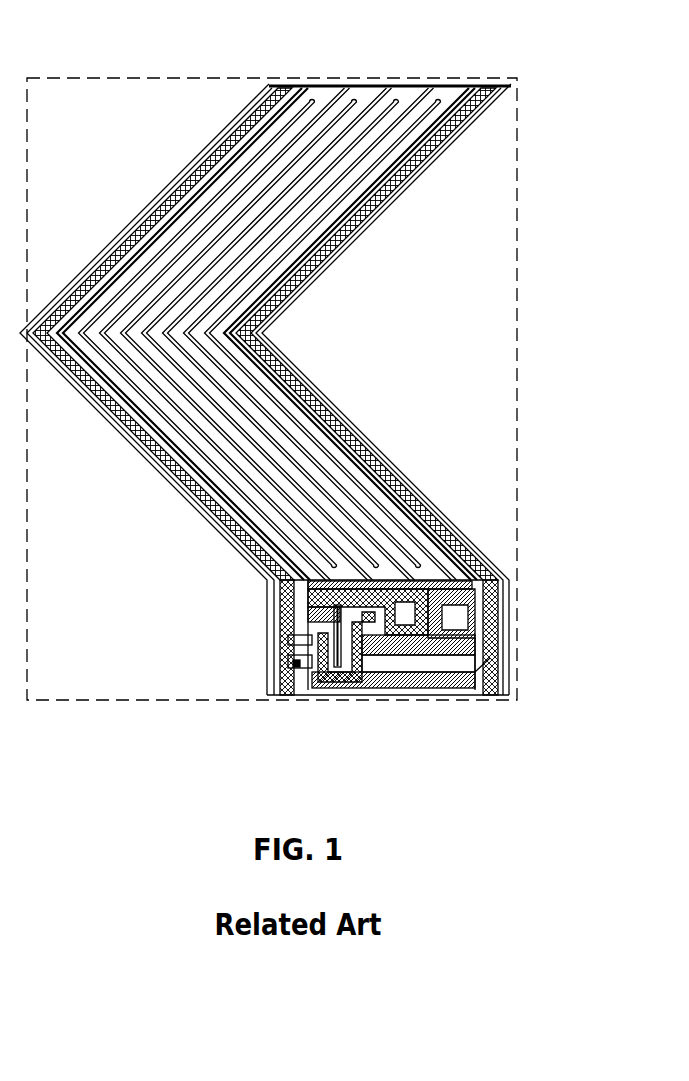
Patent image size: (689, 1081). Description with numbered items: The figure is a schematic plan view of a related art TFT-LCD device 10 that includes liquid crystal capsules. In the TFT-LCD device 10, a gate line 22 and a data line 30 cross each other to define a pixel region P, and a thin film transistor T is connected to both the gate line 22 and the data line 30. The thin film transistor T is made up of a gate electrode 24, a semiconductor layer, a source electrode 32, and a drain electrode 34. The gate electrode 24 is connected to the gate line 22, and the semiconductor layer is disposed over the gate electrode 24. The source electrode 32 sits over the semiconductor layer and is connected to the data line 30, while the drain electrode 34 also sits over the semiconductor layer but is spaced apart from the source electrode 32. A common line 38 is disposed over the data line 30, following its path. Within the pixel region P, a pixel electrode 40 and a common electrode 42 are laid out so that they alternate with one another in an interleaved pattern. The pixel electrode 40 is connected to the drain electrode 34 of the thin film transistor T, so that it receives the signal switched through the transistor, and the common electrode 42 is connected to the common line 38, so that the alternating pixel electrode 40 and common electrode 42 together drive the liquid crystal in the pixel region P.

The TFT-LCD device 10 is at (270, 47).
The pixel region P is at (517, 265).
The data line 30 is at (170, 483).
The common line 38 is at (358, 433).
The pixel electrode 40 is at (380, 473).
The common electrode 42 is at (380, 527).
The gate electrode 24 is at (287, 628).
The thin film transistor T is at (283, 663).
The source electrode 32 is at (330, 685).
The drain electrode 34 is at (360, 692).
The gate line 22 is at (415, 680).